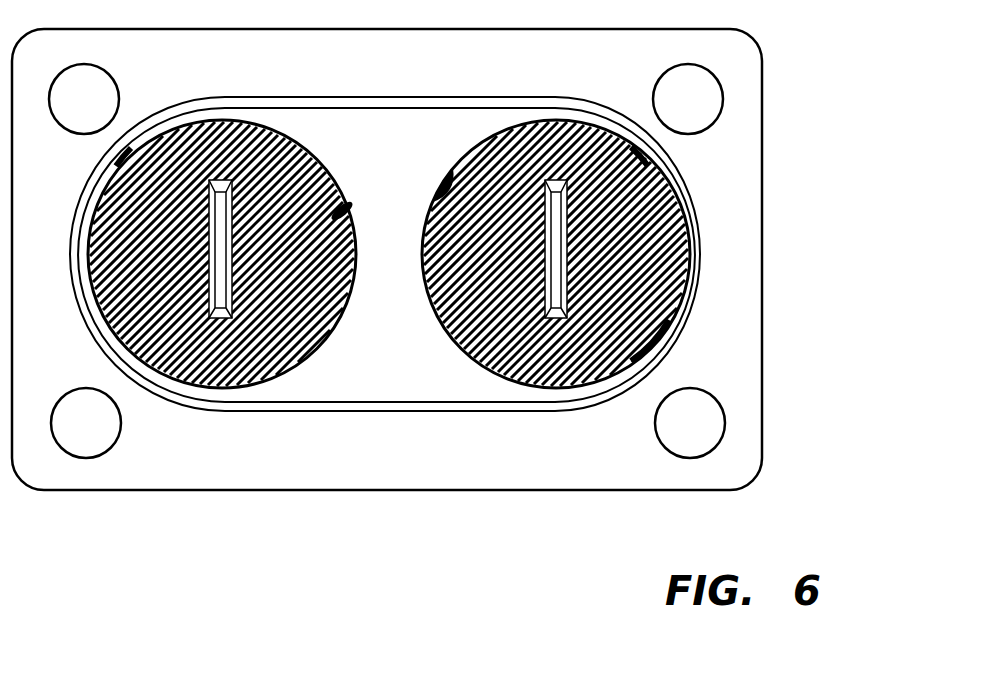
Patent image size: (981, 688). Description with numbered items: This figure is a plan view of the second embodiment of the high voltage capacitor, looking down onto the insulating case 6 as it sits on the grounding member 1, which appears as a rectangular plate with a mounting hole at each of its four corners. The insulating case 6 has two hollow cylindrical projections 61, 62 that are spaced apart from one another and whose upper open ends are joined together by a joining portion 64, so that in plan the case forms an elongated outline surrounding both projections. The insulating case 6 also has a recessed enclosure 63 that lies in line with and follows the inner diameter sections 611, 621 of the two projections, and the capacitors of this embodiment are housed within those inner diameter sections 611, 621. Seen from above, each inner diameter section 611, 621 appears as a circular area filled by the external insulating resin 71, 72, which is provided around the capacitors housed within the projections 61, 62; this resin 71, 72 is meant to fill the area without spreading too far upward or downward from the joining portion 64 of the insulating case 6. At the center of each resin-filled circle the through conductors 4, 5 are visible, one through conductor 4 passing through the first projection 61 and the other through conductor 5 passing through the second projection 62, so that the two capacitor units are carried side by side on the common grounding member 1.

The grounding member 1 is at (748, 320).
The through conductor 4 is at (227, 318).
The through conductor 5 is at (563, 318).
The insulating case 6 is at (209, 419).
The hollow cylindrical projection 61 is at (264, 122).
The inner diameter section 611 is at (337, 212).
The hollow cylindrical projection 62 is at (641, 148).
The inner diameter section 621 is at (457, 185).
The recessed enclosure 63 is at (480, 379).
The joining portion 64 is at (388, 310).
The external insulating resin 71 is at (195, 138).
The external insulating resin 72 is at (573, 141).